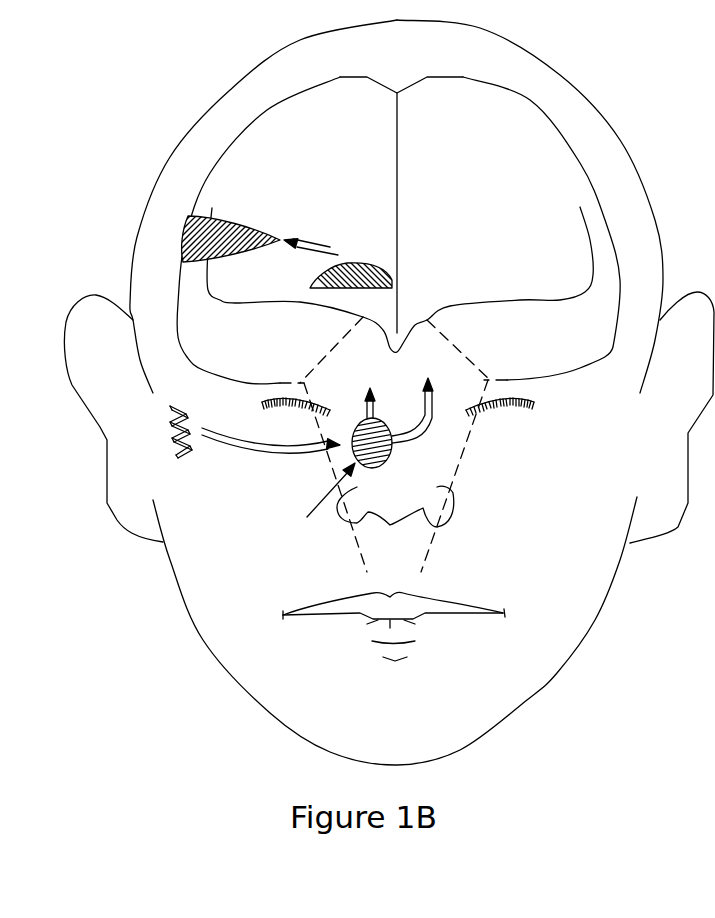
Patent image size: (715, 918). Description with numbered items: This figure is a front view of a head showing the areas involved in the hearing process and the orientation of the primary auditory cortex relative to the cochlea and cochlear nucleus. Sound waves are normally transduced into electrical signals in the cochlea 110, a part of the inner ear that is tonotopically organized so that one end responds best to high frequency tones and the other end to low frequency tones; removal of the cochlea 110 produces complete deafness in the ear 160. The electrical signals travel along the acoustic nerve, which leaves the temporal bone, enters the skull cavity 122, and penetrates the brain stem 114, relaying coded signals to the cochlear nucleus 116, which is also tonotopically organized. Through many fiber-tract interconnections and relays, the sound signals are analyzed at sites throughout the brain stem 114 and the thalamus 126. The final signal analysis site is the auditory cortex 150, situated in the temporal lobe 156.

The temporal lobe 156 is at (232, 125).
The auditory cortex 150 is at (200, 207).
The skull cavity 122 is at (288, 330).
The thalamus 126 is at (388, 264).
The brain stem 114 is at (407, 378).
The cochlea 110 is at (215, 381).
The cochlear nucleus 116 is at (376, 475).
The ear 160 is at (96, 436).